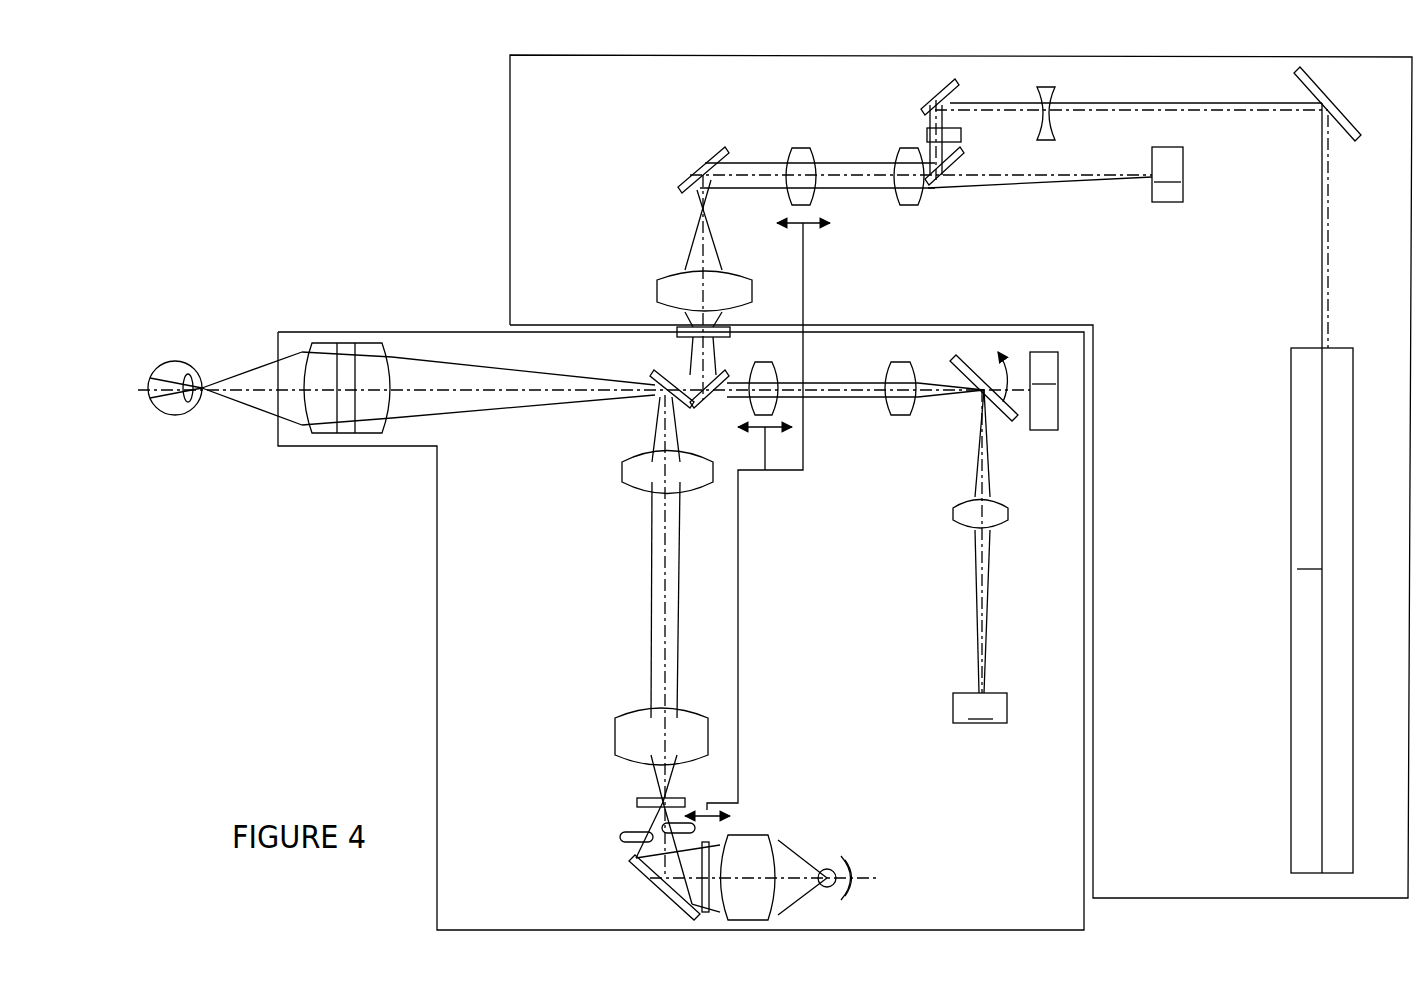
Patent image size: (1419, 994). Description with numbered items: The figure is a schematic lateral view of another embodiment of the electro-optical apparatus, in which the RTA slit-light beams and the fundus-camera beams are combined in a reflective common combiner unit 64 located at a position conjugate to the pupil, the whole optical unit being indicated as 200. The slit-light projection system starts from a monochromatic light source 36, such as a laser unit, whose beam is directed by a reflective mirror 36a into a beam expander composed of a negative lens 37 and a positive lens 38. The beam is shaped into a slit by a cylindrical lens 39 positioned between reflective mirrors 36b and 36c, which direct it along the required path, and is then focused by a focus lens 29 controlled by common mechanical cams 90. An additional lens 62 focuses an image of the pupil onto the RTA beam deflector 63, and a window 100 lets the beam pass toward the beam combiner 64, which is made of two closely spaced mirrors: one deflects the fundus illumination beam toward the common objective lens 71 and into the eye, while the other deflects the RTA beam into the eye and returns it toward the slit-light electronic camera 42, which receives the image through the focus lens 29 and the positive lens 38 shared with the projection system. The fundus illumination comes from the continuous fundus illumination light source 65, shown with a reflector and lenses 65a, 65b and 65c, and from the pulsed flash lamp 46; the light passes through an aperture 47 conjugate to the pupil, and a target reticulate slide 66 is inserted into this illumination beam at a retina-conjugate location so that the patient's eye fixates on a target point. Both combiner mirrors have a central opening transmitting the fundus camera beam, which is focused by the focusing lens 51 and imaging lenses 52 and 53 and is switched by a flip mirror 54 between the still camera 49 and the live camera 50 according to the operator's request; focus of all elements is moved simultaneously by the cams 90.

The illumination and measuring unit housing 200 is at (510, 170).
The common objective lens 71 is at (395, 350).
The beam combiner 64 is at (678, 376).
The focusing lens 51 is at (772, 368).
The imaging lens 52 is at (897, 410).
The flip mirror 54 is at (1003, 420).
The still camera 49 is at (1044, 391).
The imaging lens 53 is at (960, 518).
The live camera 50 is at (980, 708).
The lens 65c is at (630, 470).
The lens 65b is at (620, 734).
The aperture 47 is at (637, 800).
The flash lamp 46 is at (620, 837).
The common mechanical cams 90 is at (738, 512).
The deflecting mirror 65a is at (650, 878).
The target reticulate slide 66 is at (708, 845).
The fundus illumination light source 65 is at (828, 868).
The RTA beam deflector 63 is at (699, 172).
The additional lens 62 is at (679, 281).
The window 100 is at (676, 328).
The focus lens 29 is at (802, 150).
The positive lens 38 is at (904, 152).
The slit-light electronic camera 42 is at (1167, 174).
The reflective mirror 36b is at (934, 94).
The cylindrical lens 39 is at (961, 135).
The reflective mirror 36c is at (962, 156).
The negative lens 37 is at (1052, 90).
The reflective mirror 36a is at (1322, 84).
The monochromatic light source 36 is at (1322, 610).